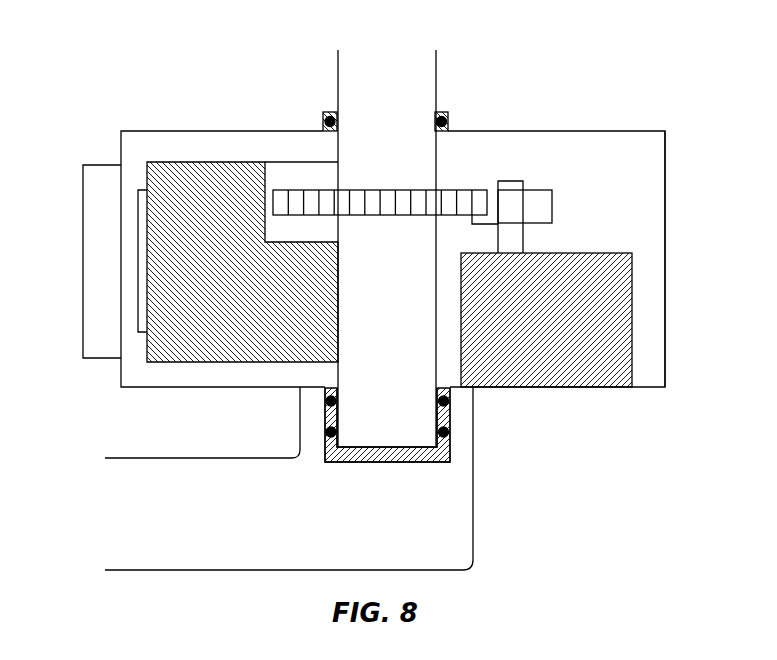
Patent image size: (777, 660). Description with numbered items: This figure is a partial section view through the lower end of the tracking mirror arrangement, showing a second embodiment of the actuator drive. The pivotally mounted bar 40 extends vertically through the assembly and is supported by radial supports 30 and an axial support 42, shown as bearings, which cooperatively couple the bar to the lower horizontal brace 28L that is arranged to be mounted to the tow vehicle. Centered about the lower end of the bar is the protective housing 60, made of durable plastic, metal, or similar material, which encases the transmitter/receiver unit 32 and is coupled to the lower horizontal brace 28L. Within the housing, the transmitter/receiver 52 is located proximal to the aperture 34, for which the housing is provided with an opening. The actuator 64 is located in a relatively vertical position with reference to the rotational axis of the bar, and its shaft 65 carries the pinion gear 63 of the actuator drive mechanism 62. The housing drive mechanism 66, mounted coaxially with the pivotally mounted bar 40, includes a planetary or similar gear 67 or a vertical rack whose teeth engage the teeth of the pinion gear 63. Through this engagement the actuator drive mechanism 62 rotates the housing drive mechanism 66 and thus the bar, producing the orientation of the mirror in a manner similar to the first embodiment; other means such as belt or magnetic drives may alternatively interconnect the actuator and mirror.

The transmitter/receiver unit 32 is at (188, 120).
The radial supports 30 is at (448, 122).
The aperture 34 is at (138, 265).
The transmitter/receiver 52 is at (228, 315).
The pivotally mounted bar 40 is at (403, 331).
The planetary gear 67 is at (362, 205).
The housing drive mechanism 66 is at (477, 187).
The pinion gear 63 is at (532, 203).
The actuator drive mechanism 62 is at (553, 207).
The shaft 65 is at (512, 238).
The actuator 64 is at (561, 336).
The protective housing 60 is at (665, 265).
The axial support 42 is at (390, 457).
The lower horizontal brace 28L is at (238, 528).